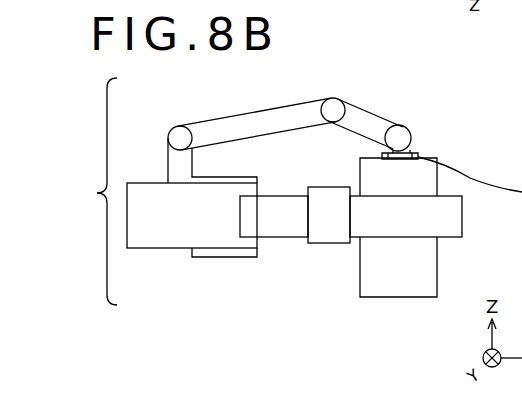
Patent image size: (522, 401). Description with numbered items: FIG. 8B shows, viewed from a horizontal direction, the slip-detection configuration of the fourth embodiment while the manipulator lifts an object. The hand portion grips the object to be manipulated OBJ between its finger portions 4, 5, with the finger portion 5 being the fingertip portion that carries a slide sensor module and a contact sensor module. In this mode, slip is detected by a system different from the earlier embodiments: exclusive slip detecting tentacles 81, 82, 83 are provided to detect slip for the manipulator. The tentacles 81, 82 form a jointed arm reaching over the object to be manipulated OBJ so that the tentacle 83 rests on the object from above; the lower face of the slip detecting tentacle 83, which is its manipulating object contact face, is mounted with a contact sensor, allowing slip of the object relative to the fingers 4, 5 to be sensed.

The slip detecting tentacle 81 is at (242, 125).
The slip detecting tentacle 82 is at (375, 125).
The slip detecting tentacle 83 is at (413, 150).
The finger portion 4 is at (278, 228).
The finger portion 5 is at (393, 223).
The object to be manipulated OBJ is at (432, 272).